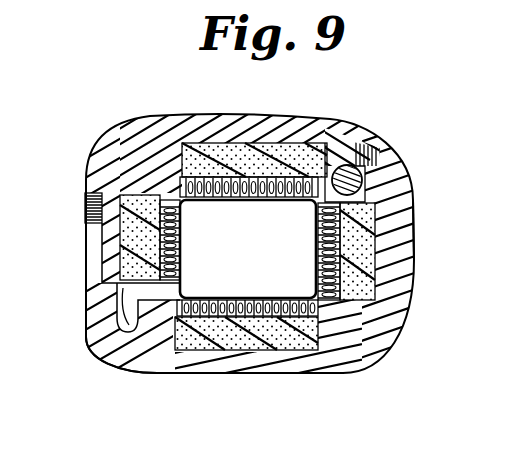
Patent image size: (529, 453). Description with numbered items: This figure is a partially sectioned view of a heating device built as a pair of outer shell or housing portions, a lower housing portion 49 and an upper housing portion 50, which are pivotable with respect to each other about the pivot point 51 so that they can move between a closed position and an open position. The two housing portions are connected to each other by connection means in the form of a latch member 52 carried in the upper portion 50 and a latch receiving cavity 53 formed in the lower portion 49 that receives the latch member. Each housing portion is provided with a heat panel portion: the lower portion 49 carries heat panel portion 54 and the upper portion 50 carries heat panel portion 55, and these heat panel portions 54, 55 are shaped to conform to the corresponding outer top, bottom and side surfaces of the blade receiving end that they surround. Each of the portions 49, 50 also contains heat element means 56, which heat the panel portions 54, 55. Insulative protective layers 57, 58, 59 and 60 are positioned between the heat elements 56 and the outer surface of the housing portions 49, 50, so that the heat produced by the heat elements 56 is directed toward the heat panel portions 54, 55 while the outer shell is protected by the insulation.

The lower housing portion 49 is at (390, 347).
The upper housing portion 50 is at (272, 116).
The pivot point 51 is at (372, 157).
The latch member 52 is at (110, 280).
The latch receiving cavity 53 is at (95, 363).
The heat panel portion 54 is at (385, 265).
The heat panel portion 55 is at (160, 190).
The heat element means 56 is at (130, 140).
The insulative protective layer 57 is at (222, 142).
The insulative protective layer 58 is at (390, 223).
The insulative protective layer 59 is at (317, 335).
The insulative protective layer 60 is at (85, 233).